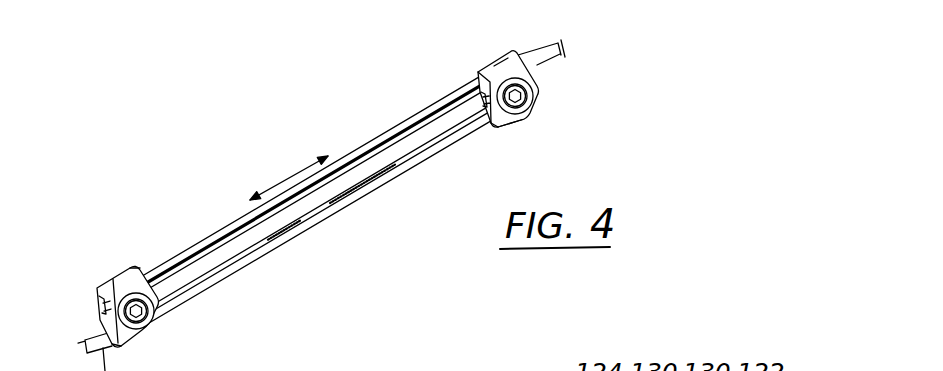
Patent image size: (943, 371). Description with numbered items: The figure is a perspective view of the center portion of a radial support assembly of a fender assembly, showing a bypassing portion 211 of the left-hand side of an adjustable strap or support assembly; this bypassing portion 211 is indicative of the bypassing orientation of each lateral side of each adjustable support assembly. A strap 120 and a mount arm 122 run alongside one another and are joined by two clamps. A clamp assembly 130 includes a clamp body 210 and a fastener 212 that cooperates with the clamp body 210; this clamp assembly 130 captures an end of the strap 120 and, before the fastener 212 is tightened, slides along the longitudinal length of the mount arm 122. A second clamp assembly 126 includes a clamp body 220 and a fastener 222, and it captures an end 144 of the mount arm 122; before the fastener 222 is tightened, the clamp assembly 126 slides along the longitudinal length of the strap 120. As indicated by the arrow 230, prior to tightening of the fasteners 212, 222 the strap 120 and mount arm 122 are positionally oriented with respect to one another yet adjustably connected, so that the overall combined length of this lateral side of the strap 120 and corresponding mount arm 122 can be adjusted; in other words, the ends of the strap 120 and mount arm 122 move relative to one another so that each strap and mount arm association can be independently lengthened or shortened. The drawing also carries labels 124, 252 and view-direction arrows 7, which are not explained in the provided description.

The strap 120 is at (316, 224).
The mount arm 122 is at (413, 125).
The second end of bar 124 is at (500, 133).
The clamp assembly 126 is at (140, 337).
The clamp assembly 130 is at (522, 121).
The end of mount arm 144 is at (141, 248).
The clamp body 210 is at (538, 89).
The bypassing portion 211 is at (334, 85).
The fastener 212 is at (533, 104).
The clamp body 220 is at (112, 275).
The fastener 222 is at (148, 316).
The arrow 230 is at (288, 178).
The rail 252 is at (460, 370).
The section line 7- 7 is at (462, 93).